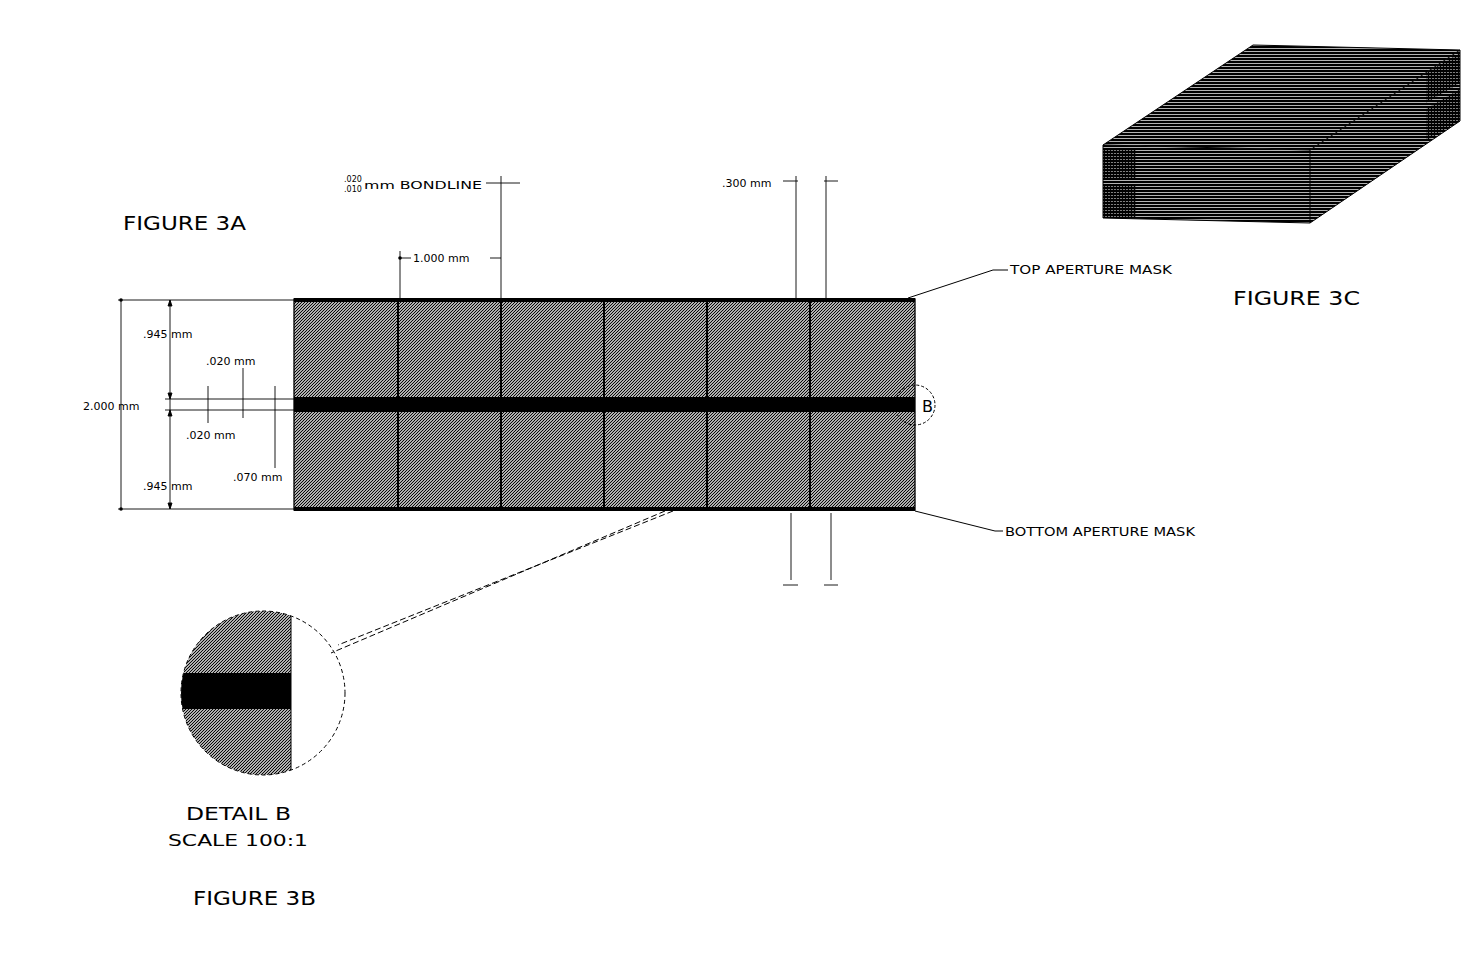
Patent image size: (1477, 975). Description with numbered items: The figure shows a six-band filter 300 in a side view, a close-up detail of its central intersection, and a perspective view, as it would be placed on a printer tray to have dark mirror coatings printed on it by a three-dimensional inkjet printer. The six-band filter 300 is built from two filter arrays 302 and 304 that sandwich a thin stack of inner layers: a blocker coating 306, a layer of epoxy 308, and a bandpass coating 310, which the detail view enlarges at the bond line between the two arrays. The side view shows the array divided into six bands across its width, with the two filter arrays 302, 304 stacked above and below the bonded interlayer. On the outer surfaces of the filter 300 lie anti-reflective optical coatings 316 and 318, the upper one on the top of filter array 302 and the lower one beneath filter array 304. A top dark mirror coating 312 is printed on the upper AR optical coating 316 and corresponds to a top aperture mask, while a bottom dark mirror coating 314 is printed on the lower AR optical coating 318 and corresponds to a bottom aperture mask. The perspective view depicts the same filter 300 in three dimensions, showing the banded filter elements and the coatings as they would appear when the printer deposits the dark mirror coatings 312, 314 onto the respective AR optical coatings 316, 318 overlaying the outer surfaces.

In FIG. 3A, the six-band filter 300 is at (433, 148).
In FIG. 3C, the six-band filter 300 is at (1165, 42).
In FIG. 3A, the filter array 302 is at (908, 340).
In FIG. 3B, the filter array 302 is at (283, 628).
In FIG. 3A, the filter array 304 is at (908, 445).
In FIG. 3B, the filter array 304 is at (285, 735).
In FIG. 3B, the blocker coating 306 is at (289, 667).
In FIG. 3B, the epoxy 308 is at (285, 684).
In FIG. 3B, the bandpass coating 310 is at (285, 702).
In FIG. 3A, the top dark mirror coating 312 is at (604, 247).
In FIG. 3A, the bottom dark mirror coating 314 is at (604, 572).
In FIG. 3A, the AR optical coating 316 is at (867, 290).
In FIG. 3A, the AR optical coating 318 is at (870, 503).